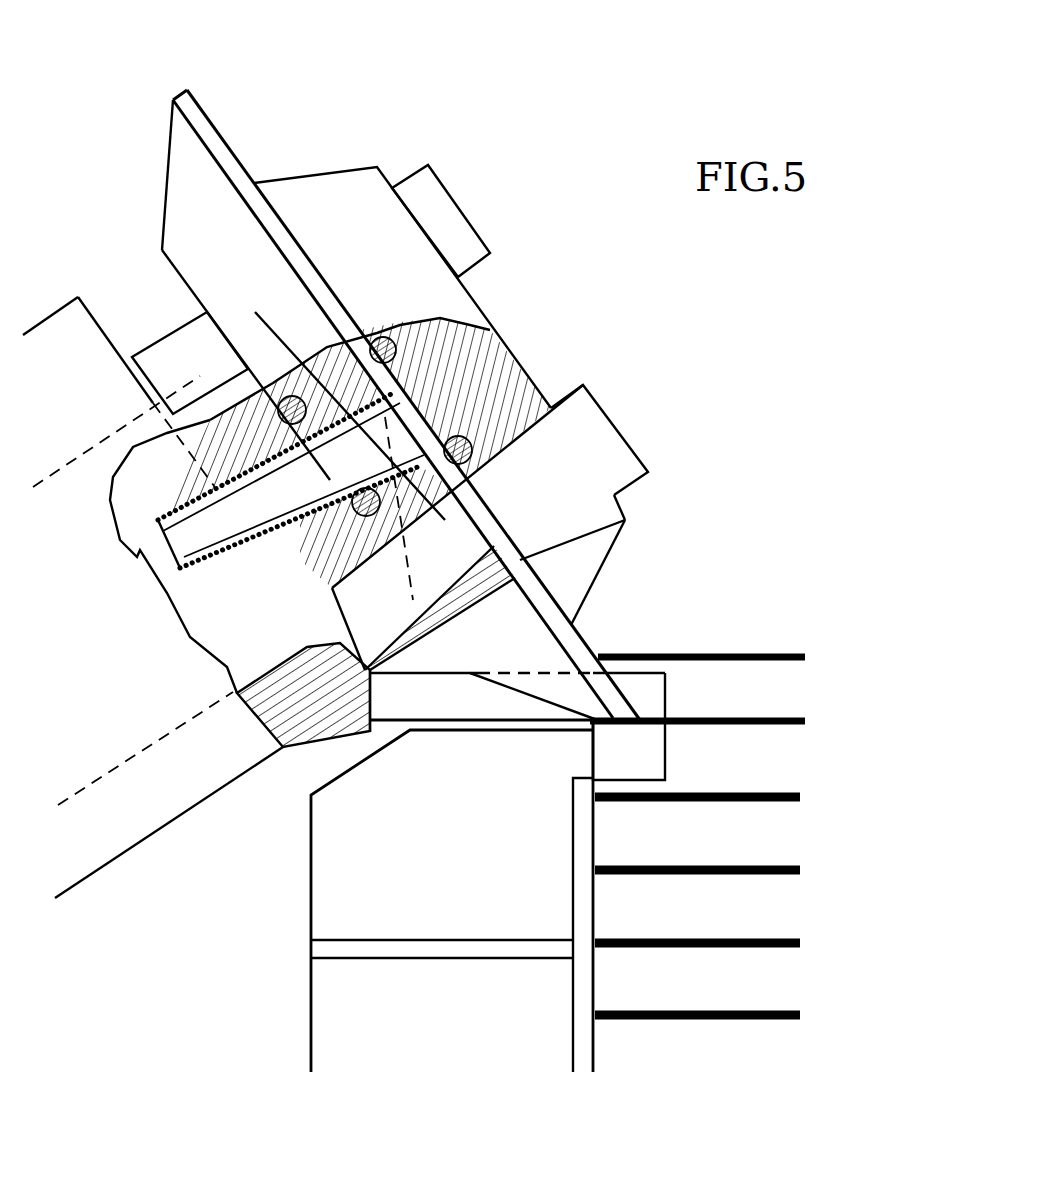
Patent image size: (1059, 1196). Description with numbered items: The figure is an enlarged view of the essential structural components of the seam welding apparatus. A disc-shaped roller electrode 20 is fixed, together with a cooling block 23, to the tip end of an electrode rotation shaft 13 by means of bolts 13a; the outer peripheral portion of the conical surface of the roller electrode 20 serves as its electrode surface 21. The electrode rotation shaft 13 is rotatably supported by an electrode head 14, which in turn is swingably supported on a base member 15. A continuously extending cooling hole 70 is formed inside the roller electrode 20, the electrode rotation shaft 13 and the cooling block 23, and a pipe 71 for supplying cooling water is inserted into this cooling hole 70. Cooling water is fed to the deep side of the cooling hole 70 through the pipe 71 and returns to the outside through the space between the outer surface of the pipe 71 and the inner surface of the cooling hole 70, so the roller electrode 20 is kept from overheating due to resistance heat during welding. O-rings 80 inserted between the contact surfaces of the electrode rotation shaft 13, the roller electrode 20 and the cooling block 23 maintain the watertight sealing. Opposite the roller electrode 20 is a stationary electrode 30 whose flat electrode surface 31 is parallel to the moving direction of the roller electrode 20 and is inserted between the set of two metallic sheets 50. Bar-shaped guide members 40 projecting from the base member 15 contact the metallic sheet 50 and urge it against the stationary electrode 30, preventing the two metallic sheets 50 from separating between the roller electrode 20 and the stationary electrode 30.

The electrode rotation shaft 13 is at (180, 333).
The bolts 13a is at (434, 186).
The electrode head 14 is at (182, 805).
The base member 15 is at (620, 835).
The roller electrode 20 is at (150, 180).
The electrode surface 21 is at (176, 98).
The cooling block 23 is at (356, 184).
The stationary electrode 30 is at (645, 757).
The electrode surface 31 is at (652, 710).
The guide members 40 is at (647, 692).
The metallic sheets 50 is at (766, 655).
The cooling hole 70 is at (500, 363).
The pipe 71 is at (488, 332).
The O-rings 80 is at (286, 396).